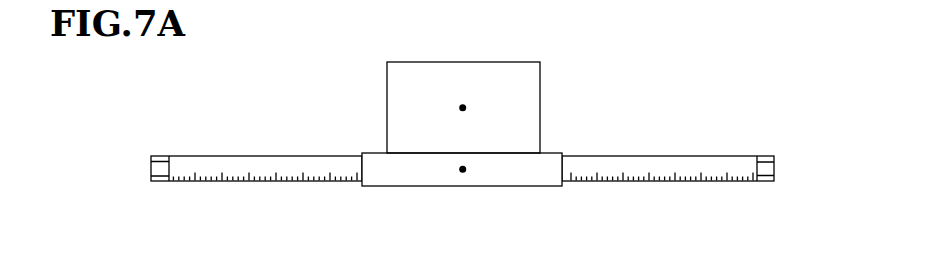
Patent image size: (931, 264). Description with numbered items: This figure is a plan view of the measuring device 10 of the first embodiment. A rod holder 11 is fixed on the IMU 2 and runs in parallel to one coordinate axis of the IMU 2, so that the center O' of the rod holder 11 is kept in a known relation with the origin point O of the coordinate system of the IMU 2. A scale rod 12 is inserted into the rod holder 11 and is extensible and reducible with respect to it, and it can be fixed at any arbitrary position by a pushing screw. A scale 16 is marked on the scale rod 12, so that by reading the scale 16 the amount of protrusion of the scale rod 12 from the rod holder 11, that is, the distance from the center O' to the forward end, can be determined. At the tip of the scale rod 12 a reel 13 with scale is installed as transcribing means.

The IMU 2 is at (490, 62).
The measuring device 10 is at (683, 93).
The rod holder 11 is at (549, 153).
The scale rod 12 is at (704, 156).
The reel with scale 13 is at (764, 181).
The scale 16 is at (270, 178).
The origin point O is at (431, 68).
The center of the rod holder O' is at (513, 194).